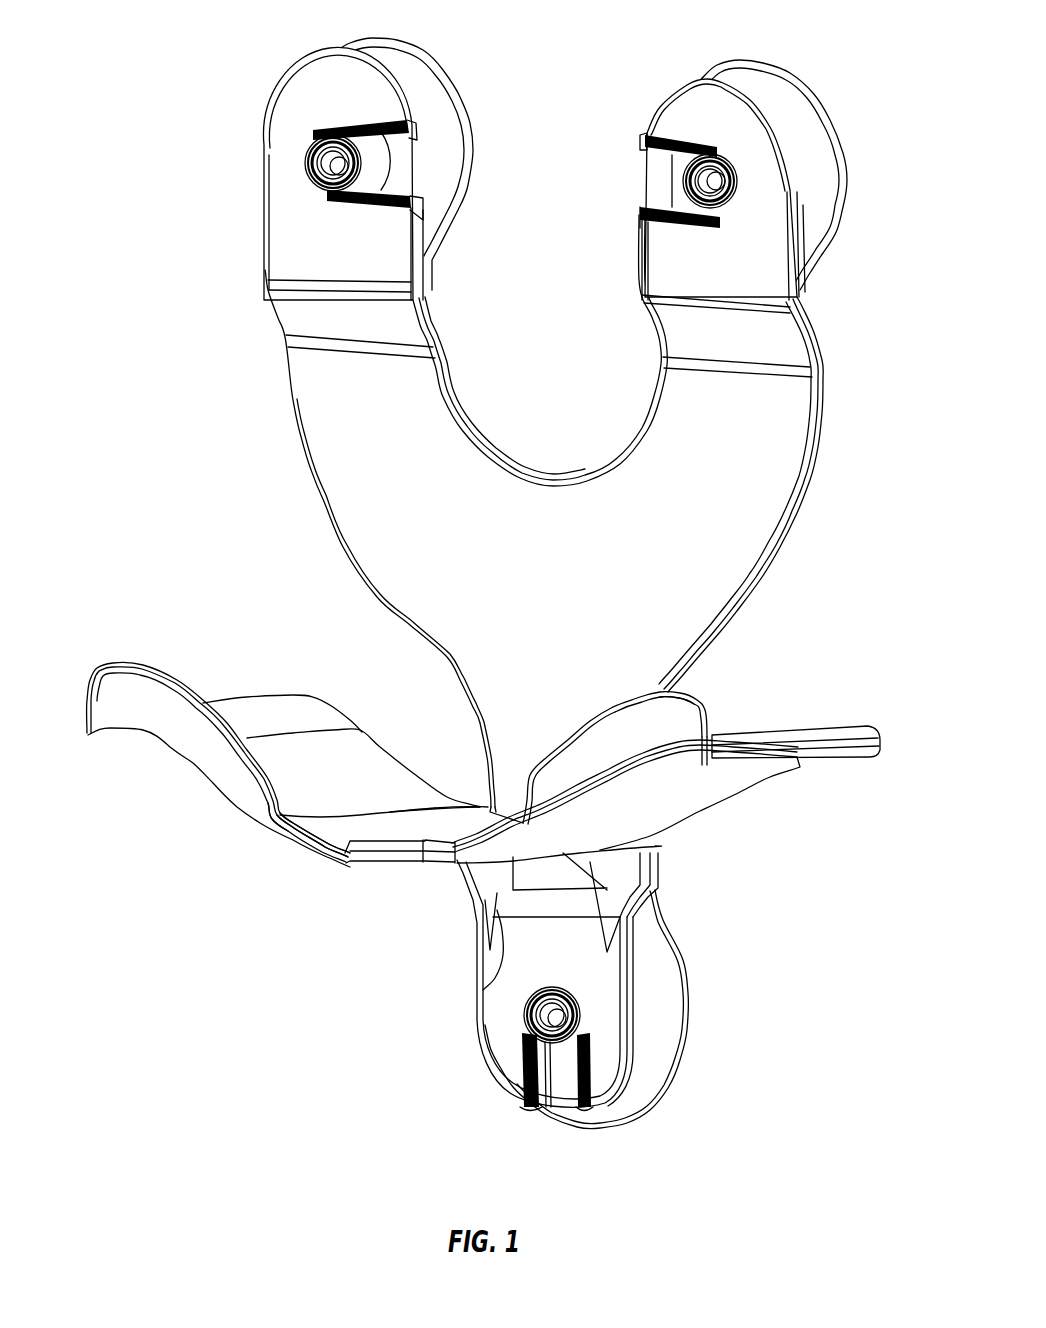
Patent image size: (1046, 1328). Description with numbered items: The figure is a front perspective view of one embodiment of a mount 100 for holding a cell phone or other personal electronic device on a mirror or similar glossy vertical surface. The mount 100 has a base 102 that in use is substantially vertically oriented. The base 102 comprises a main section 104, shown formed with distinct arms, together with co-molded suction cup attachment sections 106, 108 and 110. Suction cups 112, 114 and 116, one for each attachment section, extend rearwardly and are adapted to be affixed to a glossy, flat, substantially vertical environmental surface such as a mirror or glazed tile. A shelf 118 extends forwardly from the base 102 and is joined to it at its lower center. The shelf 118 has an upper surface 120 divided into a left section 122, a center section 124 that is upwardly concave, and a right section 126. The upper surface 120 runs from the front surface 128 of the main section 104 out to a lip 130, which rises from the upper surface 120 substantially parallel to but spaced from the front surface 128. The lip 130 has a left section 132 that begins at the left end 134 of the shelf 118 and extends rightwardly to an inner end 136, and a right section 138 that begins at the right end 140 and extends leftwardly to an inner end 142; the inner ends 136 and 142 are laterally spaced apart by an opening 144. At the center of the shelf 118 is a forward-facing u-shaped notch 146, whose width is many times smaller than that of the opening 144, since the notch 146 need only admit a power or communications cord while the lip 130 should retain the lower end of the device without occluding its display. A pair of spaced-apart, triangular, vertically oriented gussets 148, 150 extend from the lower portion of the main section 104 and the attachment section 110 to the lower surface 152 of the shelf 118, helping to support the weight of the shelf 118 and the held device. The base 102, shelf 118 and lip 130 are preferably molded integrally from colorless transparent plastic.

The mount 100 is at (856, 150).
The base 102 is at (743, 537).
The main section 104 is at (536, 605).
The suction cup attachment section 106 is at (270, 250).
The suction cup attachment section 108 is at (773, 253).
The suction cup attachment section 110 is at (613, 993).
The suction cup 112 is at (392, 63).
The suction cup 114 is at (768, 83).
The suction cup 116 is at (663, 1037).
The shelf 118 is at (430, 773).
The upper surface 120 is at (325, 792).
The left section 122 is at (267, 713).
The center section 124 is at (330, 827).
The right section 126 is at (838, 727).
The front surface 128 is at (533, 678).
The lip 130 is at (677, 713).
The left section 132 is at (207, 763).
The left end 134 is at (93, 708).
The inner end 136 is at (260, 793).
The right section 138 is at (643, 715).
The right end 140 is at (712, 720).
The inner end 142 is at (515, 807).
The opening 144 is at (419, 807).
The u-shaped notch 146 is at (459, 810).
The gusset 148 is at (483, 990).
The gusset 150 is at (620, 870).
The lower surface 152 is at (737, 800).